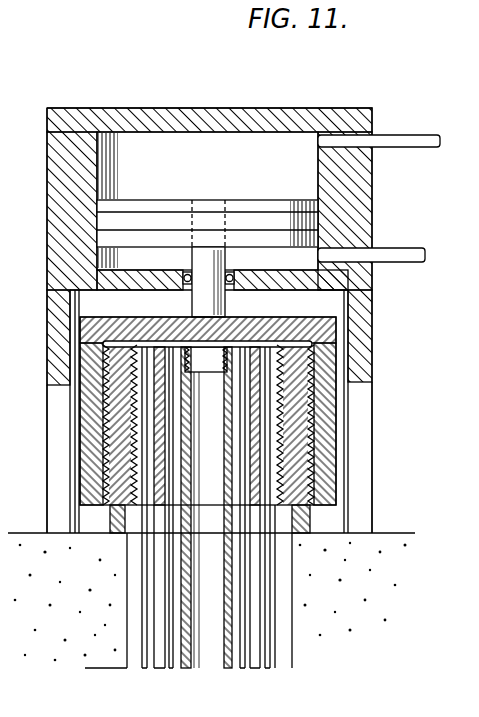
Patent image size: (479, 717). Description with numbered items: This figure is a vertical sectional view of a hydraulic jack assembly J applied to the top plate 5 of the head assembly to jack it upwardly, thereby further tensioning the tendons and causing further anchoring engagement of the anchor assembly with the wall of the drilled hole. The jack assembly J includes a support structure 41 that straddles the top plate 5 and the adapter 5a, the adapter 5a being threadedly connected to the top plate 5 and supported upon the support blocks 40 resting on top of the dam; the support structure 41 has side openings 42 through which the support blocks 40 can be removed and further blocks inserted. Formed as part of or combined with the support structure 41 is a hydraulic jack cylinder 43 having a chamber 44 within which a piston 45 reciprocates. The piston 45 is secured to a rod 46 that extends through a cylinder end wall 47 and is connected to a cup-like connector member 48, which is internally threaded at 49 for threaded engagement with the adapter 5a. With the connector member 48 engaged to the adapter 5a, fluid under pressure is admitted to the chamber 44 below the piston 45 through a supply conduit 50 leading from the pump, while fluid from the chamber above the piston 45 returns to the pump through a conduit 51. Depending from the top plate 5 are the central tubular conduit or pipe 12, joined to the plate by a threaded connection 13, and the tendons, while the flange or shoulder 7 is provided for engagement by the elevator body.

The hydraulic jack assembly J is at (91, 86).
The hydraulic jack cylinder 43 is at (175, 108).
The chamber 44 is at (207, 201).
The piston 45 is at (258, 215).
The rod 46 is at (215, 304).
The cylinder end wall 47 is at (162, 288).
The cup-like connector member 48 is at (325, 328).
The support structure 41 is at (360, 346).
The side openings 42 is at (360, 385).
The internal threads 49 is at (305, 378).
The adapter 5a is at (300, 442).
The top plate 5 is at (282, 478).
The support blocks 40 is at (300, 519).
The tubular conduit or pipe 12 is at (232, 560).
The threaded connection 13 is at (190, 478).
The outwardly extended flange or shoulder 7 is at (168, 630).
The supply conduit 50 is at (385, 248).
The return conduit 51 is at (400, 150).